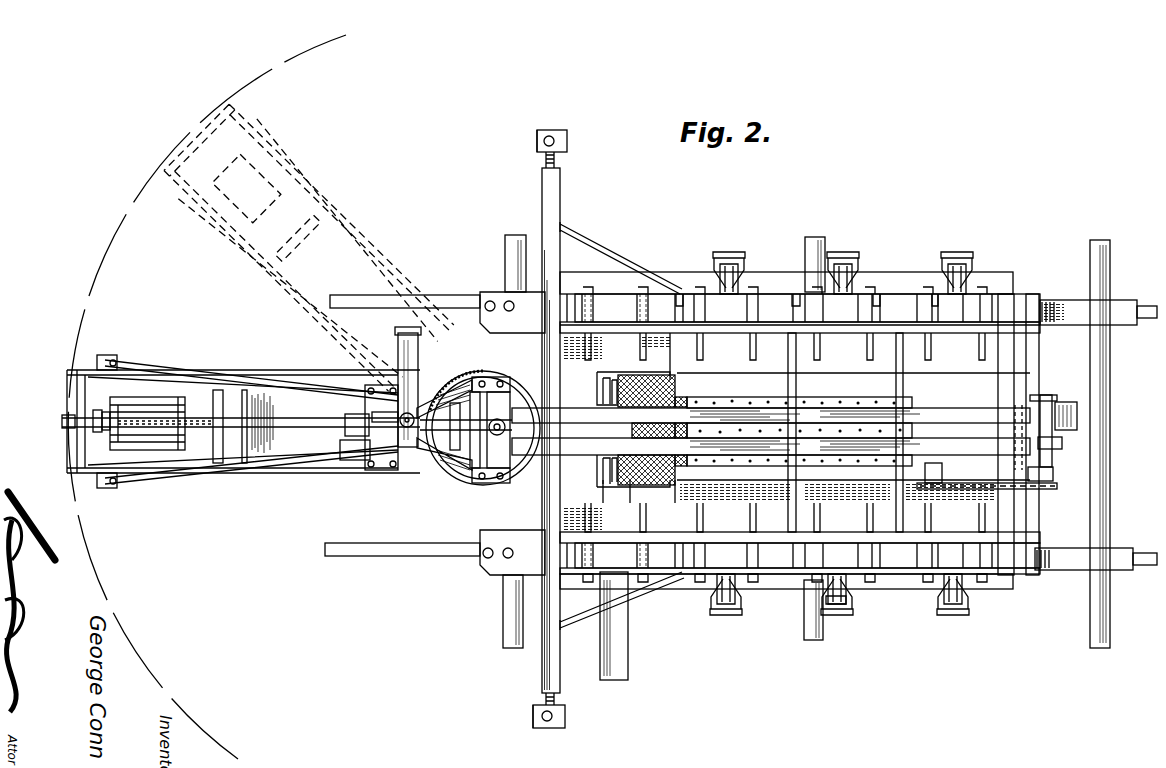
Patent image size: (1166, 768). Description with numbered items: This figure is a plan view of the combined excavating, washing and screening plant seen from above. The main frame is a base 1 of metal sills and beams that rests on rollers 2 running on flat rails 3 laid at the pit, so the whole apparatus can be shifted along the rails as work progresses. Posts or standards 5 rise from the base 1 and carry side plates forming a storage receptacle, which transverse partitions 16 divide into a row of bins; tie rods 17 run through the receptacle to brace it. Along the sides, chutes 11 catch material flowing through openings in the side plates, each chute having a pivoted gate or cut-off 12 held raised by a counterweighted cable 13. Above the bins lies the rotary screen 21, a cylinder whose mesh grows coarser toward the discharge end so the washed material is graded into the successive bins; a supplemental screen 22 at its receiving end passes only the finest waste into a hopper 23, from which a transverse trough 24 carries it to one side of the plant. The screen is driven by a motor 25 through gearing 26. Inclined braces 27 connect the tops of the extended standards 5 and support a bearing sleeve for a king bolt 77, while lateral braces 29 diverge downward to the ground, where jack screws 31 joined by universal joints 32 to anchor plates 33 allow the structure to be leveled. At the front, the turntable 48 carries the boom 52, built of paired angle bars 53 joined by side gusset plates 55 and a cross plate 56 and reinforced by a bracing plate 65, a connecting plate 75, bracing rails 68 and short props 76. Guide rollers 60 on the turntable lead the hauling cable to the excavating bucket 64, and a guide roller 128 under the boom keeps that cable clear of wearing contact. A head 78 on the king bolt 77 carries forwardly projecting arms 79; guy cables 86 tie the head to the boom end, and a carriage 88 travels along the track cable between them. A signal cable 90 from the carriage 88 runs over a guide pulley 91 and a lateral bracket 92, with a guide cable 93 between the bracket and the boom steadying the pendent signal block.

The base 1 is at (486, 562).
The rollers 2 is at (510, 612).
The flat rails 3 is at (446, 297).
The posts or standards 5 is at (1008, 296).
The chutes 11 is at (855, 266).
The gate or cut-off 12 is at (845, 255).
The cable 13 is at (855, 600).
The transverse partitions 16 is at (800, 376).
The tie rods 17 is at (978, 519).
The rotary screen 21 is at (842, 468).
The supplemental screen 22 is at (680, 385).
The hopper or chute 23 is at (608, 372).
The trough or chute 24 is at (630, 632).
The motor 25 is at (1078, 416).
The gearing 26 is at (1060, 487).
The inclined braces 27 is at (940, 410).
The lateral braces 29 is at (562, 218).
The jack screws 31 is at (560, 160).
The universal joints or ball and socket joints 32 is at (567, 143).
The anchor plates 33 is at (547, 131).
The turntable 48 is at (490, 482).
The boom 52 is at (250, 462).
The angle bars 53 is at (145, 383).
The side gusset plates 55 is at (112, 356).
The cross plate 56 is at (67, 390).
The idlers or guide rollers 60 is at (490, 377).
The excavating bucket 64 is at (124, 456).
The bracing plate 65 is at (390, 448).
The bracing rails 68 is at (196, 376).
The connecting plate 75 is at (258, 452).
The short props 76 is at (362, 428).
The king bolt 77 is at (512, 432).
The head 78 is at (512, 416).
The arms 79 is at (440, 400).
The guy cables 86 is at (230, 375).
The carriage 88 is at (155, 432).
The cable 90 is at (376, 432).
The guide pulley 91 is at (380, 424).
The bracket 92 is at (362, 372).
The cable 93 is at (395, 355).
The guide roller 128 is at (224, 408).